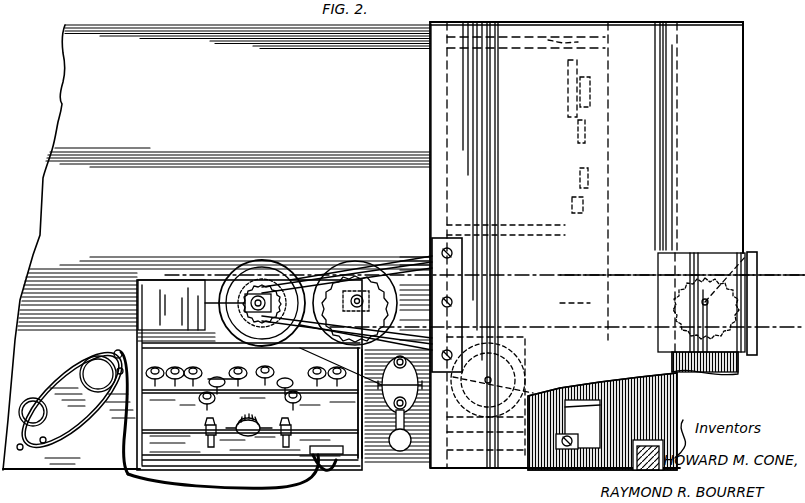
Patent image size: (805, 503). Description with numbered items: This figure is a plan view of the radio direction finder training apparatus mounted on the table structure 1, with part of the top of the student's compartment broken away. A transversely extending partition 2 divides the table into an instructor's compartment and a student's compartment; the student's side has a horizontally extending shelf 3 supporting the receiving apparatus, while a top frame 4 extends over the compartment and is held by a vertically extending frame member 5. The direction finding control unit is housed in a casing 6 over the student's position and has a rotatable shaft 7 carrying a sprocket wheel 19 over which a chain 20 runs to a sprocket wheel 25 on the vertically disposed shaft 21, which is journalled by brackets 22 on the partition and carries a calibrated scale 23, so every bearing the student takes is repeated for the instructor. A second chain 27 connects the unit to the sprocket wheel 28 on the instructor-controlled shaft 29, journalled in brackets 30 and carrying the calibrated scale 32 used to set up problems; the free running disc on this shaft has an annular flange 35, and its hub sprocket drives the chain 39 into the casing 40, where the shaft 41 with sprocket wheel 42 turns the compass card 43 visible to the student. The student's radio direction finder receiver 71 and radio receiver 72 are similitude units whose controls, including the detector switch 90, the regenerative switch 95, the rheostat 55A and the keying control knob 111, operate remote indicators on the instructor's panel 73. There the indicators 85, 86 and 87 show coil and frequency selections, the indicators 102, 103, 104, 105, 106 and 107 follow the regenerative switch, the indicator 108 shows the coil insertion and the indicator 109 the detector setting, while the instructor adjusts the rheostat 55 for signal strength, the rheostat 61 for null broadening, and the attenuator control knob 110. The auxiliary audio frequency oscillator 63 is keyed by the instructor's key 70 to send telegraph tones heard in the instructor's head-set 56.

The table structure 1 is at (680, 388).
The partition 2 is at (428, 122).
The shelf 3 is at (600, 405).
The top frame 4 is at (743, 153).
The frame member 5 is at (683, 420).
The casing 6 is at (702, 258).
The rotatable shaft 7 is at (744, 254).
The sprocket wheel 19 is at (713, 294).
The chain 20 is at (627, 270).
The shaft 21 is at (353, 277).
The brackets 22 is at (427, 270).
The calibrated scale 23 is at (340, 265).
The sprocket wheel 25 is at (367, 280).
The chain 27 is at (302, 282).
The sprocket wheel 28 is at (242, 278).
The shaft 29 is at (227, 305).
The brackets 30 is at (313, 280).
The calibrated scale 32 is at (256, 259).
The annular flange 35 is at (245, 270).
The chain 39 is at (313, 345).
The casing 40 is at (515, 337).
The shaft 41 is at (517, 352).
The sprocket wheel 42 is at (522, 368).
The compass card 43 is at (523, 390).
The variable rheostat 55 is at (206, 437).
The variable rheostat 55A is at (583, 212).
The instructor's head-set 56 is at (31, 390).
The variable rheostat 61 is at (292, 438).
The auxiliary audio frequency oscillator 63 is at (565, 43).
The instructor's key 70 is at (396, 430).
The radio direction finder receiver 71 is at (600, 303).
The radio receiver 72 is at (573, 68).
The instructor's panel 73 is at (122, 352).
The indicator 85 is at (155, 367).
The indicator 86 is at (177, 367).
The indicator 87 is at (197, 366).
The adjustable switch 90 is at (590, 173).
The switch 95 is at (593, 92).
The indicator 102 is at (201, 401).
The indicator 103 is at (219, 388).
The indicator 104 is at (232, 368).
The indicator 105 is at (263, 368).
The indicator 106 is at (281, 389).
The indicator 107 is at (295, 403).
The indicator 108 is at (317, 380).
The indicator 109 is at (337, 380).
The attenuator control knob 110 is at (246, 436).
The control knob 111 is at (583, 115).